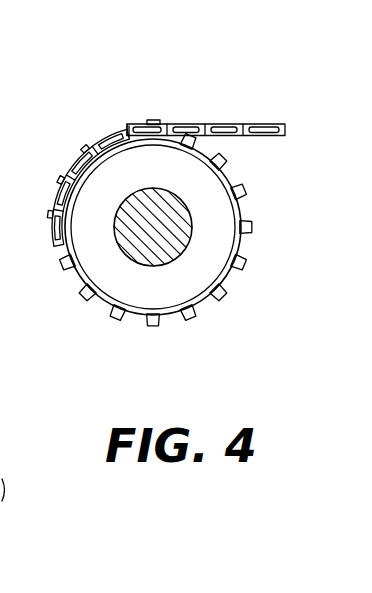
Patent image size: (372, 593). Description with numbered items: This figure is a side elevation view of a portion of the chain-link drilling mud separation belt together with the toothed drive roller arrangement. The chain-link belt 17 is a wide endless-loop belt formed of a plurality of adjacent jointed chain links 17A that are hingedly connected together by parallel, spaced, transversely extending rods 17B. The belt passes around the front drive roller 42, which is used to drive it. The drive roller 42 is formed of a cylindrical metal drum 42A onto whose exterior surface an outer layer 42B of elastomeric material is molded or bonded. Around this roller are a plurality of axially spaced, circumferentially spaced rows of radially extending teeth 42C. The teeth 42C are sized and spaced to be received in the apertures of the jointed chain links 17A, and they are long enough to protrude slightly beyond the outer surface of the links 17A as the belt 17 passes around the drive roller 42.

The chain-link belt 17 is at (234, 118).
The jointed chain links 17A is at (129, 125).
The transversely extending rods 17B is at (178, 123).
The front drive roller 42 is at (276, 170).
The cylindrical metal drum 42A is at (117, 284).
The outer layer of elastomeric material 42B is at (230, 277).
The radially extending teeth 42C is at (256, 226).